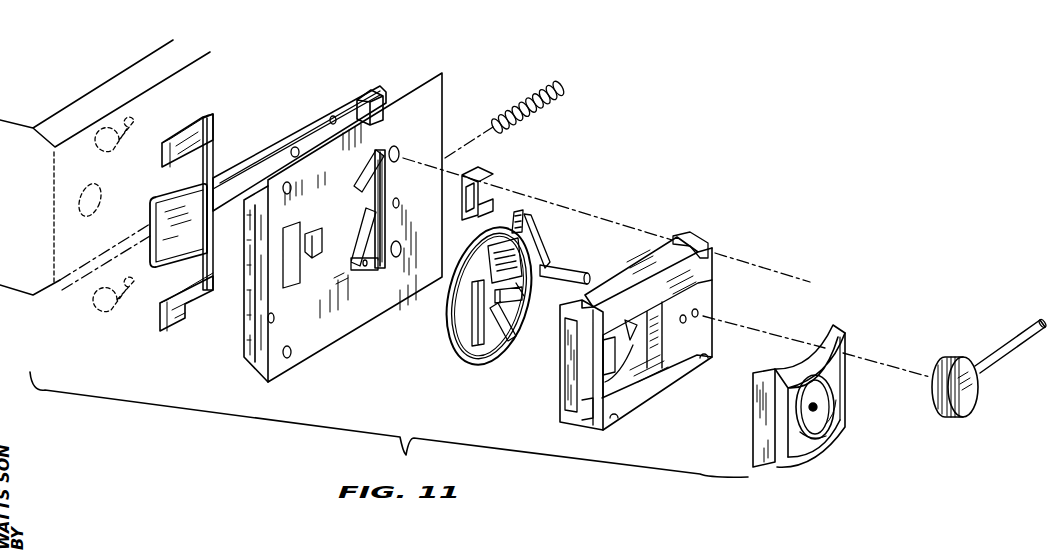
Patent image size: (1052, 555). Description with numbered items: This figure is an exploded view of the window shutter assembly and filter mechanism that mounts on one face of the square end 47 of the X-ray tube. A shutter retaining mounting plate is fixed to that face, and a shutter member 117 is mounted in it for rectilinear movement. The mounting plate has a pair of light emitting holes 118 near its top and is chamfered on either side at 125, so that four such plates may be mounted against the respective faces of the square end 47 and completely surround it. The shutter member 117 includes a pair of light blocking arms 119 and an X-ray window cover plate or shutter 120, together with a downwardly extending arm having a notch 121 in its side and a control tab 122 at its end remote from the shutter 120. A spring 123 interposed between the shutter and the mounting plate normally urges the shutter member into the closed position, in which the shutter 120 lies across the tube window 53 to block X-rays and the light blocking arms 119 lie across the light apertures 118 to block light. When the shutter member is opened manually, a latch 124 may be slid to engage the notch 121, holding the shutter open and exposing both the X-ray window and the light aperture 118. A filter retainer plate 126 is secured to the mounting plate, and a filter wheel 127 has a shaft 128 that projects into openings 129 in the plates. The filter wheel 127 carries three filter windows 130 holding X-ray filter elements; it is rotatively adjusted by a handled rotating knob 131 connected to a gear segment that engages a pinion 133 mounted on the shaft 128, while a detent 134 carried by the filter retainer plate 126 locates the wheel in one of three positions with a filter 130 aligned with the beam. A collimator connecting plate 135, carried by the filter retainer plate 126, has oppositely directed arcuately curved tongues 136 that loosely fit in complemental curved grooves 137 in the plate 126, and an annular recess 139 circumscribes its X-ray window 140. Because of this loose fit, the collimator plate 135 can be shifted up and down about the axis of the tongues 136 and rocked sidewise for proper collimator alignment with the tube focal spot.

The square end 47 is at (52, 298).
The tube window 53 is at (100, 206).
The shutter member 117 is at (246, 165).
The light emitting holes 118 is at (291, 190).
The light blocking arms 119 is at (168, 137).
The X-ray window cover plate 120 is at (149, 256).
The notch 121 is at (297, 148).
The control tab 122 is at (372, 98).
The spring 123 is at (543, 82).
The latch 124 is at (490, 190).
The chamfer 125 is at (251, 202).
The filter retainer plate 126 is at (703, 288).
The filter wheel 127 is at (486, 357).
The shaft 128 is at (542, 284).
The openings 129 is at (630, 333).
The filter windows 130 is at (492, 255).
The rotating knob 131 is at (968, 406).
The pinion 133 is at (472, 310).
The detent 134 is at (108, 152).
The collimator connecting plate 135 is at (843, 412).
The tongues 136 is at (838, 330).
The grooves 137 is at (575, 325).
The annular recess 139 is at (826, 438).
The X-ray window 140 is at (818, 407).